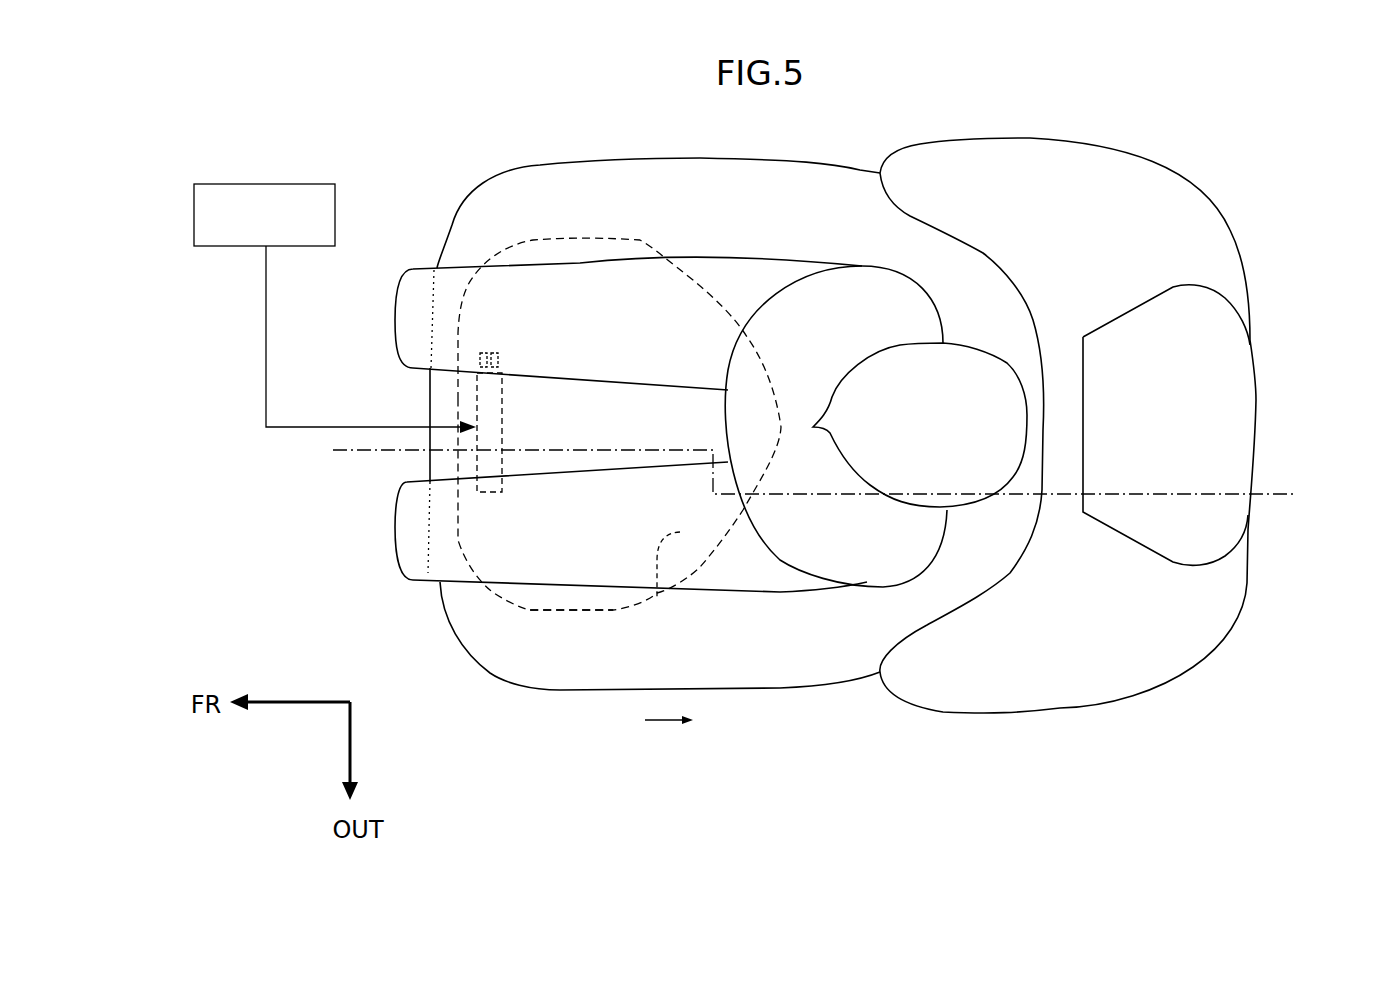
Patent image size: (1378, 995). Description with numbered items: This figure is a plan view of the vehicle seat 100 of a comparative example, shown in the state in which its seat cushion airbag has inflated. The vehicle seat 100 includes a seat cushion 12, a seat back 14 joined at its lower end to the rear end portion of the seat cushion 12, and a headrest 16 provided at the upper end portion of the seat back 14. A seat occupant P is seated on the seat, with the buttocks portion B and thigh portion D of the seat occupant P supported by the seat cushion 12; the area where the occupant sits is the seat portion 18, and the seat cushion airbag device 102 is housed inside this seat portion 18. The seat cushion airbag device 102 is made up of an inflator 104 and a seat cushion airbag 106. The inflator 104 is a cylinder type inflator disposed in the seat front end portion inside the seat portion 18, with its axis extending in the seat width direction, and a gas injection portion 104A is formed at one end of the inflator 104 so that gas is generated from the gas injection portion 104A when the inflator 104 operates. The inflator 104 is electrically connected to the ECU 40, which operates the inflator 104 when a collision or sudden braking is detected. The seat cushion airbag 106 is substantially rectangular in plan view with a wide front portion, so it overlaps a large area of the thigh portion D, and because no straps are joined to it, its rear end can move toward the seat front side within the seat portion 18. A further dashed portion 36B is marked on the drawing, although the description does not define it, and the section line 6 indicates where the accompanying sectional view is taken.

The vehicle seat 100 is at (892, 477).
The seat cushion 12 is at (790, 688).
The seat back 14 is at (1193, 665).
The headrest 16 is at (1256, 423).
The seat portion 18 is at (587, 207).
The ECU 40 is at (258, 184).
The seat cushion airbag device 102 is at (542, 232).
The inflator 104 is at (490, 496).
The gas injection portion 104A is at (427, 372).
The seat cushion airbag 106 is at (560, 612).
The airbag lower end portion 36B is at (657, 600).
The section line 6- 6 is at (333, 452).
The seat occupant P is at (822, 257).
The thigh portion D is at (640, 245).
The buttocks portion B is at (838, 592).